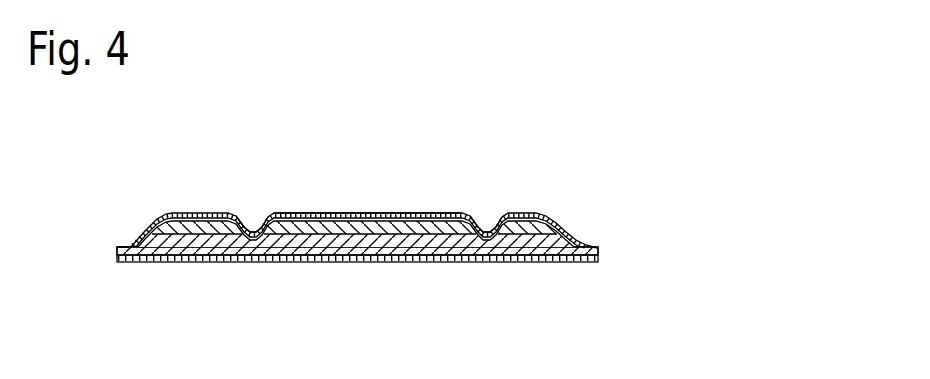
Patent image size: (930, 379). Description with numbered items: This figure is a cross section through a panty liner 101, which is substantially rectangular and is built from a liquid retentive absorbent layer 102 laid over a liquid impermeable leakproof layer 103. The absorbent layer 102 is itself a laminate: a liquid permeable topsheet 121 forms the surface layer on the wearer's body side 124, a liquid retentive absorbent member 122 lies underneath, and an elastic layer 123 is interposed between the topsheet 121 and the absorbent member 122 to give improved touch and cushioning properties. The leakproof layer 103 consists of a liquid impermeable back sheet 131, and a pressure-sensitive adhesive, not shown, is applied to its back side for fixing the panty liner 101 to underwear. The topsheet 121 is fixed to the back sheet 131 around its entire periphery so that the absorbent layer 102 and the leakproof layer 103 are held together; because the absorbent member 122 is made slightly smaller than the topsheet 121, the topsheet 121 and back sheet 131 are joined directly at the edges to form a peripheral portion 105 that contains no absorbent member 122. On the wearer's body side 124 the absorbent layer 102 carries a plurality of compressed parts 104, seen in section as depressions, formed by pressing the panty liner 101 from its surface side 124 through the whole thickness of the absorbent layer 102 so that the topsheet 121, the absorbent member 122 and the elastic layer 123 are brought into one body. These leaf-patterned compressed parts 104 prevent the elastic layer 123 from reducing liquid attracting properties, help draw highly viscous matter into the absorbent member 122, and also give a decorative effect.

The panty liner 101 is at (437, 221).
The absorbent layer 102 is at (453, 220).
The leakproof layer 103 is at (357, 292).
The compressed parts 104 is at (252, 226).
The peripheral portion 105 is at (124, 246).
The topsheet 121 is at (541, 213).
The absorbent member 122 is at (572, 236).
The elastic layer 123 is at (556, 226).
The wearer's body side 124 is at (383, 213).
The back sheet 131 is at (487, 264).